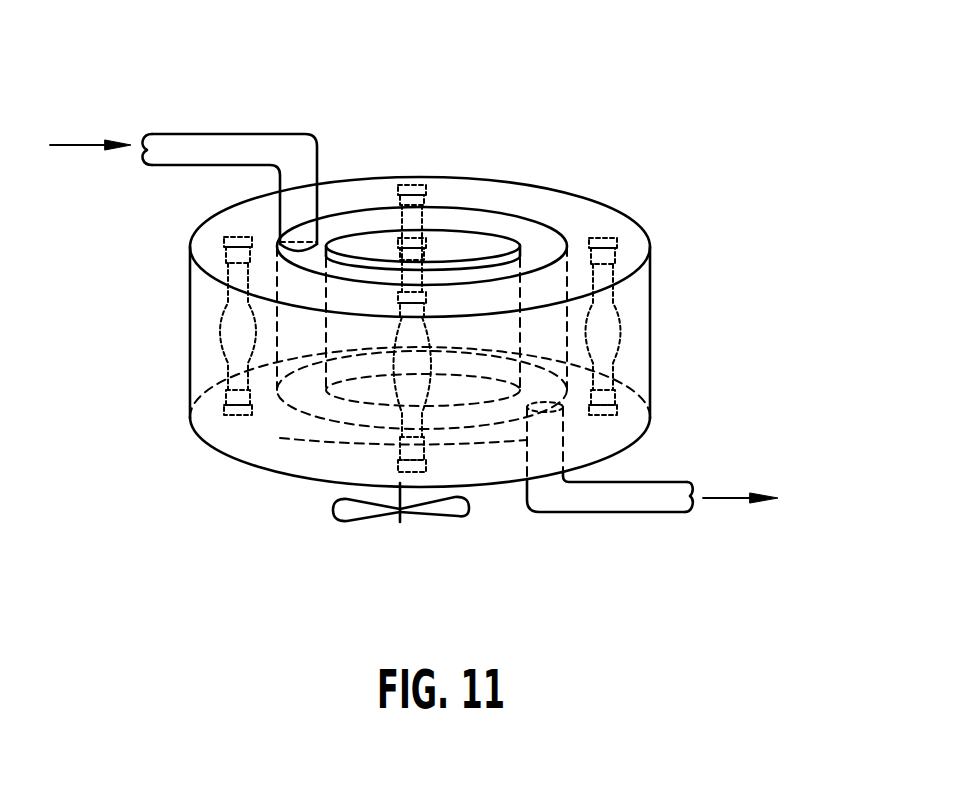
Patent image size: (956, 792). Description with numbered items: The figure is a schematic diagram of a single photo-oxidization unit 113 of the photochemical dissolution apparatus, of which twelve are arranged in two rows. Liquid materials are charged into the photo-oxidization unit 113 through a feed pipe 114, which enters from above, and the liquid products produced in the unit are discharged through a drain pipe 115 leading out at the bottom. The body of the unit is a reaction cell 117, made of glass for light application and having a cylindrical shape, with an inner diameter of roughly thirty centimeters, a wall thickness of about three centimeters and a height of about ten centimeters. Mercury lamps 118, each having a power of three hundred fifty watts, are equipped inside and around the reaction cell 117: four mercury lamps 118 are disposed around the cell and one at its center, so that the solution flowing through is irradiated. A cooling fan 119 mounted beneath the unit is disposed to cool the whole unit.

The photo-oxidization unit 113 is at (746, 251).
The feed pipe 114 is at (183, 145).
The drain pipe 115 is at (616, 500).
The reaction cell 117 is at (323, 263).
The mercury lamp 118 is at (218, 412).
The cooling fan 119 is at (452, 512).